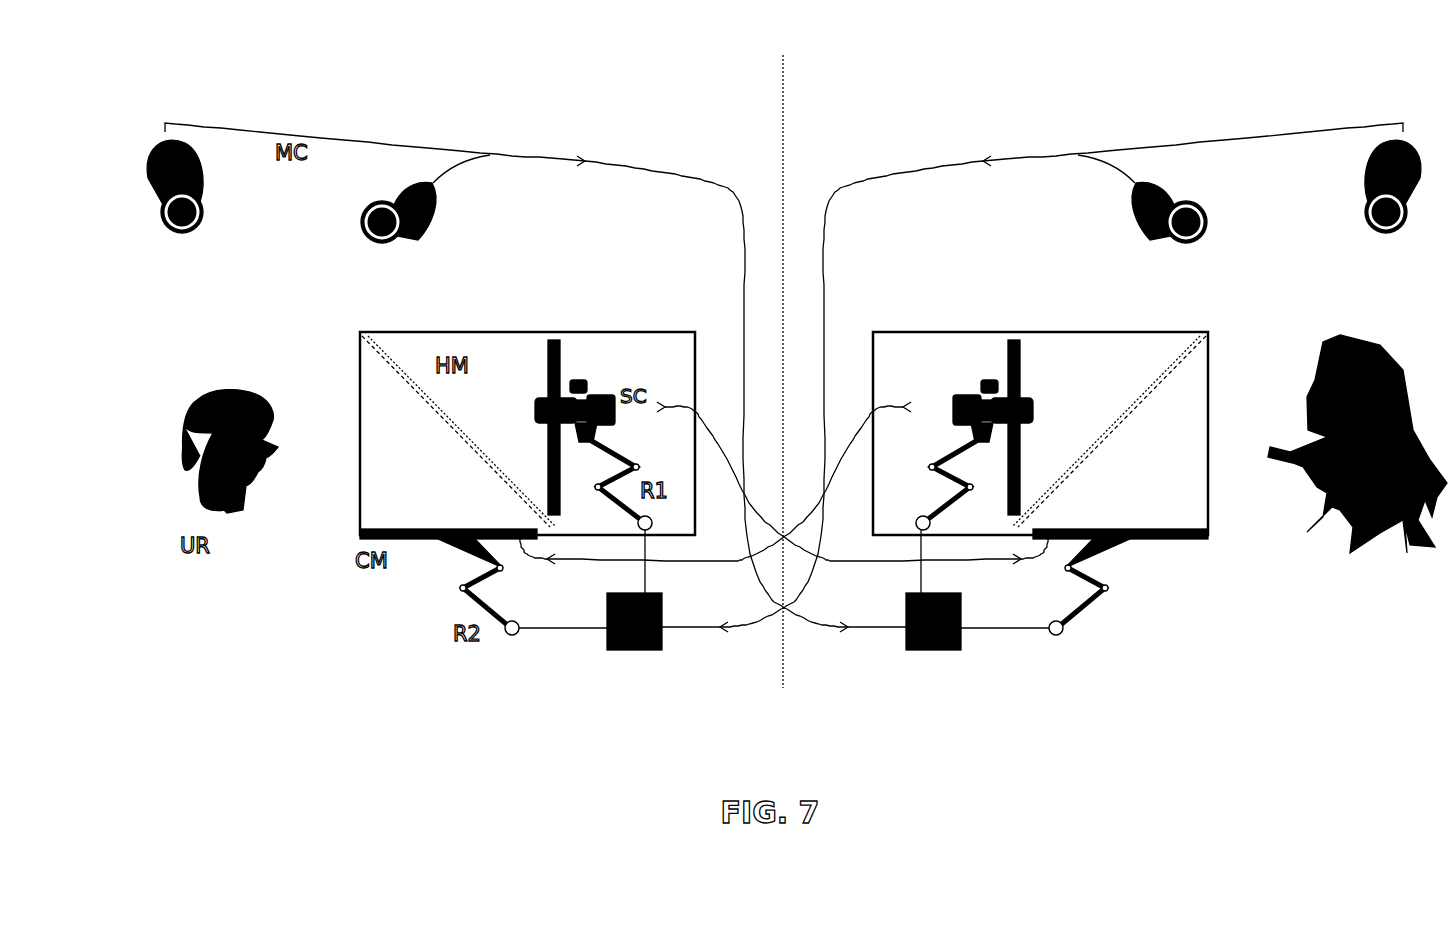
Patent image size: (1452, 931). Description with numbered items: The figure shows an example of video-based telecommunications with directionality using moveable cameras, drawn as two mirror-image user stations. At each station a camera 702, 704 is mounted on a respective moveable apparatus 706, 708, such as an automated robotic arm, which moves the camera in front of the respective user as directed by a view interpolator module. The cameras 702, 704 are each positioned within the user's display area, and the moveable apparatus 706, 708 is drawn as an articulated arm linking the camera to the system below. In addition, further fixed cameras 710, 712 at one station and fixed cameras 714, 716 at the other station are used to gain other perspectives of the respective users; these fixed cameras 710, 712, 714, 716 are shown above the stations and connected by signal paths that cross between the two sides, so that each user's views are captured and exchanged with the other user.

The camera 702 is at (580, 385).
The camera 704 is at (988, 382).
The moveable apparatus 706 is at (927, 463).
The moveable apparatus 708 is at (598, 487).
The fixed camera 710 is at (186, 170).
The fixed camera 712 is at (410, 180).
The fixed camera 714 is at (1397, 150).
The fixed camera 716 is at (1150, 177).